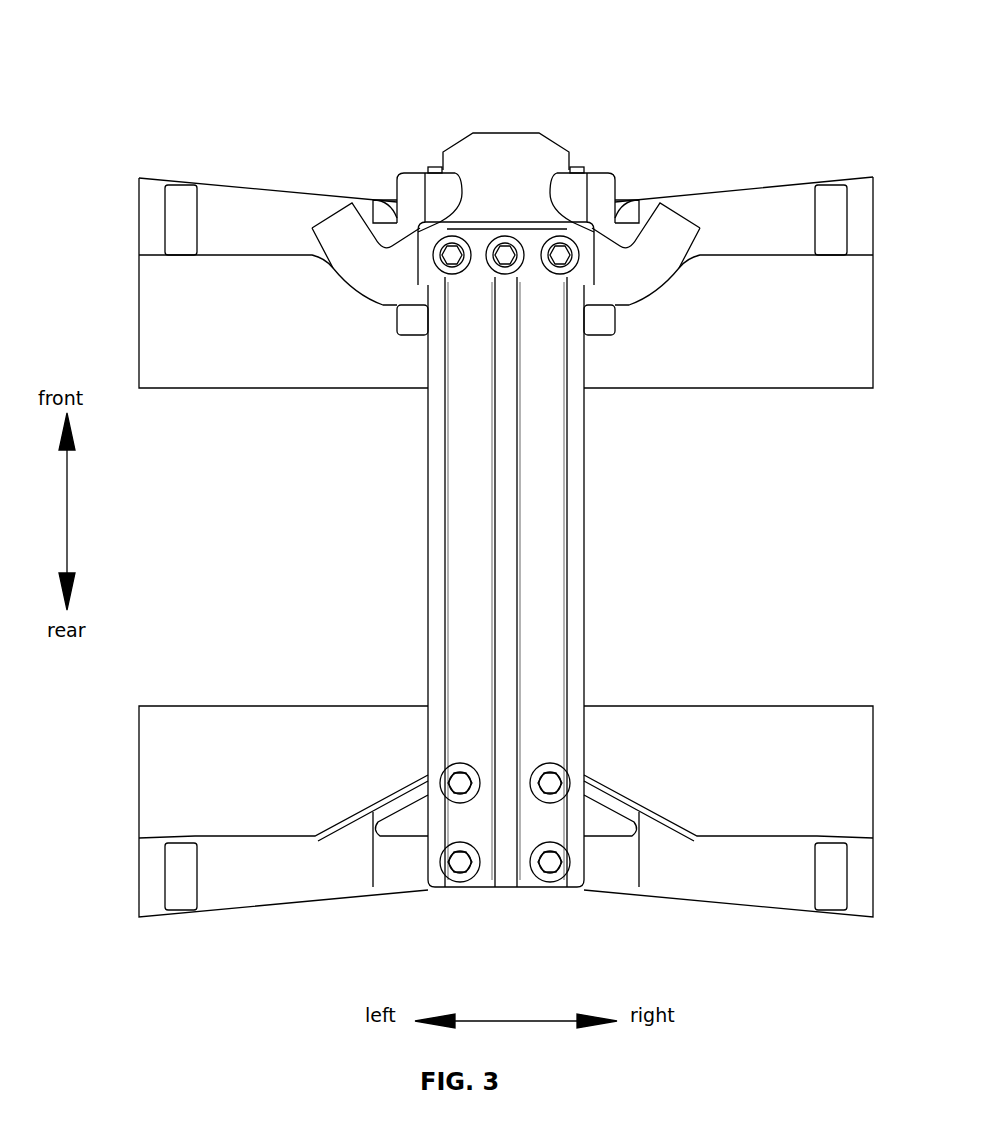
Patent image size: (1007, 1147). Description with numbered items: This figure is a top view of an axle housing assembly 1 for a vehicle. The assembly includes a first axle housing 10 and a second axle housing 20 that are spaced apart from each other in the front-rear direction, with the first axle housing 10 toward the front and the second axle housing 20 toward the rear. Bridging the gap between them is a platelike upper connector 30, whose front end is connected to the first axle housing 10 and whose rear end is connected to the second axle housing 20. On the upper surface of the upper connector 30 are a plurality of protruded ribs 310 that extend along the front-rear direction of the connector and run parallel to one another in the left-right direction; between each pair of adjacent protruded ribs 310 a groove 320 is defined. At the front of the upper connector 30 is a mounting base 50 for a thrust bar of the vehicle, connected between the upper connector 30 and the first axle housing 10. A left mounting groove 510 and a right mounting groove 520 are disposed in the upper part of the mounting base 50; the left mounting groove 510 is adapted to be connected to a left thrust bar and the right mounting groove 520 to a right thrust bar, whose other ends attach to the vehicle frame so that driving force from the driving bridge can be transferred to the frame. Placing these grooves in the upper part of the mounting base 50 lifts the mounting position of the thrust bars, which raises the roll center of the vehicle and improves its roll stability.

The axle housing assembly 1 is at (760, 103).
The first axle housing 10 is at (272, 335).
The second axle housing 20 is at (253, 753).
The upper connector 30 is at (518, 535).
The protruded ribs 310 is at (437, 520).
The groove 320 is at (467, 632).
The mounting base 50 is at (440, 192).
The left mounting groove 510 is at (418, 228).
The right mounting groove 520 is at (572, 212).